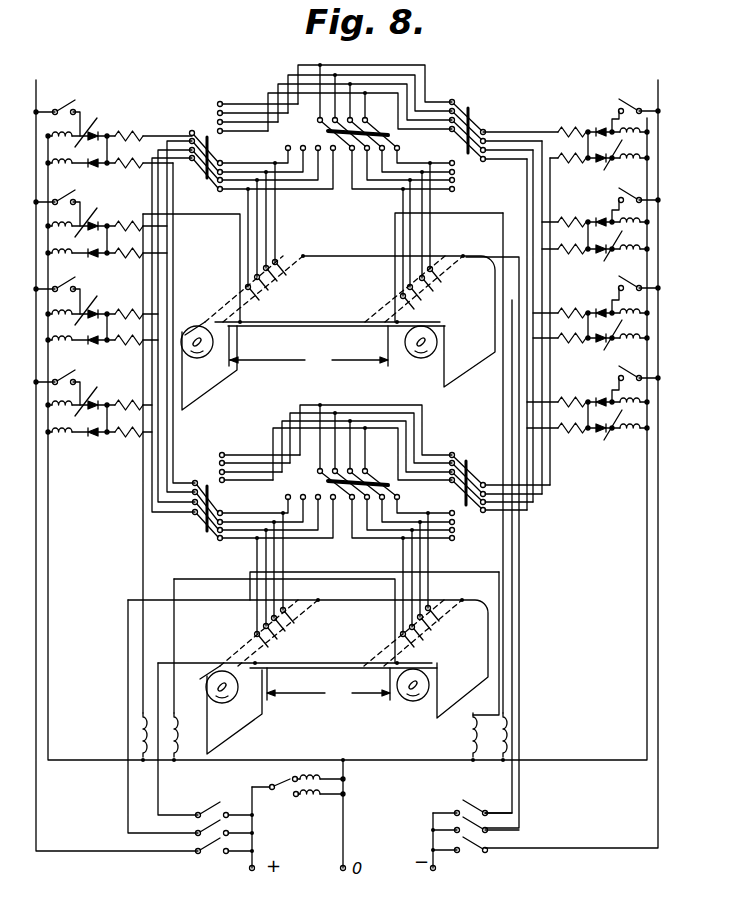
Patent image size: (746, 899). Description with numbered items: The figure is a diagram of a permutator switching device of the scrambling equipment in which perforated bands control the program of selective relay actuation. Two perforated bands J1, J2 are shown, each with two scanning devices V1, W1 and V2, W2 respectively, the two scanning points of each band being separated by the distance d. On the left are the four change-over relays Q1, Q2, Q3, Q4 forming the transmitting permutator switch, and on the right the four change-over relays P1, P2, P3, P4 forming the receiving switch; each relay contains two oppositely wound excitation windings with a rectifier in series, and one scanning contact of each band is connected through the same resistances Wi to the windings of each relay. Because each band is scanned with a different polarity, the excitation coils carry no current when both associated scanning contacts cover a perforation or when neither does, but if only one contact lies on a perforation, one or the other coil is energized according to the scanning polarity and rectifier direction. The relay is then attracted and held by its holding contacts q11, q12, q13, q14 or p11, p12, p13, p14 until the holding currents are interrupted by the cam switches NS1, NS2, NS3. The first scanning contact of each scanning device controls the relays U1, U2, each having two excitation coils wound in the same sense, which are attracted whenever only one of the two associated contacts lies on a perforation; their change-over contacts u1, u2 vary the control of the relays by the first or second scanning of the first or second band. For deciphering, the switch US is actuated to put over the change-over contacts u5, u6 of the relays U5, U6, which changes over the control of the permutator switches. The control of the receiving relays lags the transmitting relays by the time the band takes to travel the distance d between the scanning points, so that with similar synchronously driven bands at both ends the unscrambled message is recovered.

The holding contact q11 is at (57, 113).
The holding contact q12 is at (57, 203).
The holding contact q13 is at (57, 291).
The holding contact q14 is at (57, 382).
The change-over relay Q1 is at (119, 138).
The change-over relay Q2 is at (106, 223).
The change-over relay Q3 is at (102, 314).
The change-over relay Q4 is at (99, 407).
The holding contact p11 is at (636, 110).
The holding contact p12 is at (636, 199).
The holding contact p13 is at (636, 289).
The holding contact p14 is at (636, 379).
The change-over relay P1 is at (566, 159).
The change-over relay P2 is at (595, 250).
The change-over relay P3 is at (591, 341).
The change-over relay P4 is at (588, 431).
The resistance Wi is at (562, 453).
The change-over contact u1 is at (338, 127).
The change-over contact u2 is at (338, 472).
The change-over contact u5 is at (245, 321).
The change-over contact u6 is at (500, 303).
The perforated band J1 is at (332, 272).
The perforated band J2 is at (300, 663).
The scanning device V1 is at (244, 293).
The scanning device W1 is at (397, 296).
The scanning device V2 is at (255, 644).
The scanning device W2 is at (395, 643).
The distance between scanning points d is at (309, 514).
The relay U1 is at (137, 738).
The relay U2 is at (468, 738).
The relay U5 is at (308, 797).
The relay U6 is at (323, 772).
The switch US is at (287, 793).
The cam switch NS1 is at (480, 808).
The cam switch NS2 is at (200, 825).
The cam switch NS3 is at (205, 860).